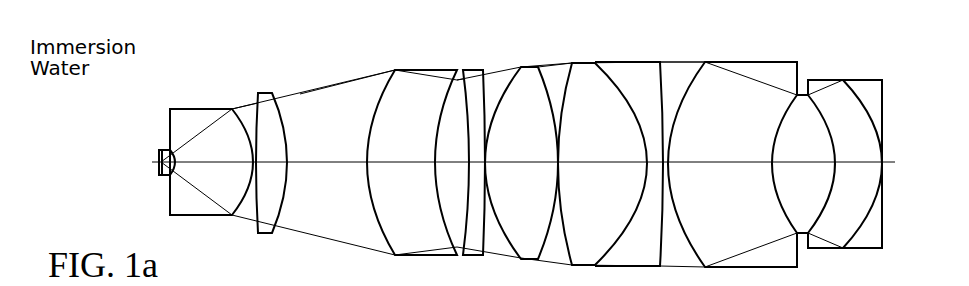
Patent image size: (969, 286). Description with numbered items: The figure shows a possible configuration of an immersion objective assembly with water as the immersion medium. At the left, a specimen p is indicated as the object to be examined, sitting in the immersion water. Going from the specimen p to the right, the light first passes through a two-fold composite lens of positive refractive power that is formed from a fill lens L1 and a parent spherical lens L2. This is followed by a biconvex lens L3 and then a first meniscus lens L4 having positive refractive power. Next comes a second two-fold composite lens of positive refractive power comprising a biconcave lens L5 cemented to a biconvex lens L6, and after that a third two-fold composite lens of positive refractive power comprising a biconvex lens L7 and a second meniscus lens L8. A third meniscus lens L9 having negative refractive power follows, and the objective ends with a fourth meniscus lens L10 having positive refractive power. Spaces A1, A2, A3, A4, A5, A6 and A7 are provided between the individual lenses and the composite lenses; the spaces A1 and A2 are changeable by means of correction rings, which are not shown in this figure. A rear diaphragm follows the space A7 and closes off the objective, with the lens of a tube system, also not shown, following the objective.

The specimen p is at (158, 164).
The fill lens L1 is at (170, 142).
The parent spherical lens L2 is at (197, 122).
The biconvex lens L3 is at (268, 118).
The first meniscus lens L4 is at (418, 84).
The biconcave lens L5 is at (484, 83).
The biconvex lens L6 is at (530, 94).
The biconvex lens L7 is at (590, 85).
The second meniscus lens L8 is at (648, 85).
The third meniscus lens L9 is at (753, 76).
The fourth meniscus lens L10 is at (847, 103).
The space A1 is at (242, 97).
The space A2 is at (343, 73).
The space A3 is at (460, 66).
The space A4 is at (557, 62).
The space A5 is at (688, 54).
The space A6 is at (803, 74).
The space A7 is at (875, 78).